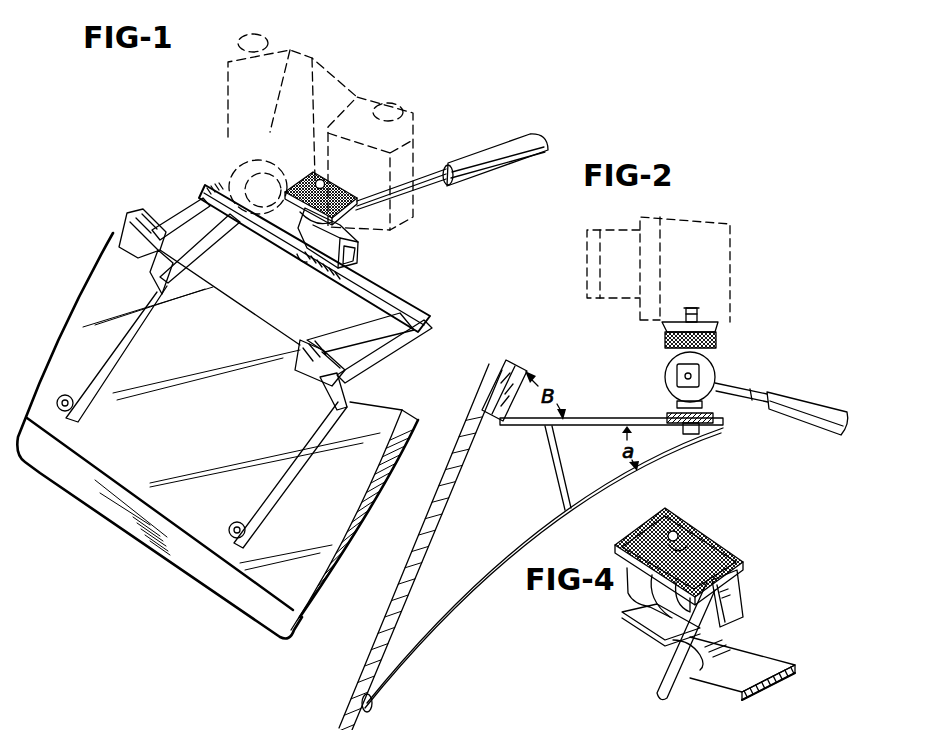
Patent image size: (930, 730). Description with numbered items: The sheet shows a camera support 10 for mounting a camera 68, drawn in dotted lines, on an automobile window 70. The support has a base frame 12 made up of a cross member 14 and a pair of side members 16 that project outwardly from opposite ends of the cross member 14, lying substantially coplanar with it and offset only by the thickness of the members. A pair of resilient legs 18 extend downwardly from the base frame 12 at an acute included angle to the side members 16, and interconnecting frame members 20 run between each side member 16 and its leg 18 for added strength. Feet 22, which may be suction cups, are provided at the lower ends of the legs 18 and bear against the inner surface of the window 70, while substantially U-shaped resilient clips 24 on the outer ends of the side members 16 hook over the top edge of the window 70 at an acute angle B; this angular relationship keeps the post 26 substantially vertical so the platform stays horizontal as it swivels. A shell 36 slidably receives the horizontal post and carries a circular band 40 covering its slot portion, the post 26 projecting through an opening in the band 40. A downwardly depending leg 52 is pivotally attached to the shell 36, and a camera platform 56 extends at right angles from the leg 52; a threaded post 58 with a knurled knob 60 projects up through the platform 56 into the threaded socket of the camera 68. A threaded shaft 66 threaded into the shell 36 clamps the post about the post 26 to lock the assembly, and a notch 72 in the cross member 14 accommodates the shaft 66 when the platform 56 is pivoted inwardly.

In FIG. 1, the camera support 10 is at (157, 178).
In FIG. 1, the base frame 12 is at (430, 306).
In FIG. 1, the cross member 14 is at (397, 303).
In FIG. 2, the cross member 14 is at (714, 417).
In FIG. 4, the cross member 14 is at (770, 652).
In FIG. 1, the side members 16 is at (198, 198).
In FIG. 2, the side members 16 is at (612, 417).
In FIG. 1, the resilient legs 18 is at (197, 242).
In FIG. 1, the interconnecting frame members 20 is at (155, 280).
In FIG. 2, the interconnecting frame members 20 is at (548, 475).
In FIG. 1, the feet 22 is at (74, 409).
In FIG. 2, the feet 22 is at (375, 703).
In FIG. 1, the clips 24 is at (127, 233).
In FIG. 2, the clips 24 is at (497, 393).
In FIG. 2, the vertical post 26 is at (684, 443).
In FIG. 1, the shell 36 is at (360, 250).
In FIG. 2, the shell 36 is at (667, 371).
In FIG. 4, the shell 36 is at (630, 588).
In FIG. 1, the circular band 40 is at (306, 258).
In FIG. 4, the circular band 40 is at (654, 622).
In FIG. 4, the downwardly depending leg 52 is at (736, 591).
In FIG. 1, the camera platform 56 is at (346, 190).
In FIG. 2, the camera platform 56 is at (723, 331).
In FIG. 4, the camera platform 56 is at (723, 543).
In FIG. 1, the threaded post 58 is at (324, 182).
In FIG. 2, the threaded post 58 is at (700, 314).
In FIG. 4, the threaded post 58 is at (681, 533).
In FIG. 2, the knurled knob 60 is at (665, 342).
In FIG. 1, the threaded shaft 66 is at (433, 186).
In FIG. 2, the threaded shaft 66 is at (756, 388).
In FIG. 4, the threaded shaft 66 is at (653, 690).
In FIG. 1, the camera 68 is at (372, 92).
In FIG. 2, the camera 68 is at (640, 218).
In FIG. 1, the window 70 is at (406, 407).
In FIG. 2, the window 70 is at (416, 543).
In FIG. 4, the notch 72 is at (707, 662).